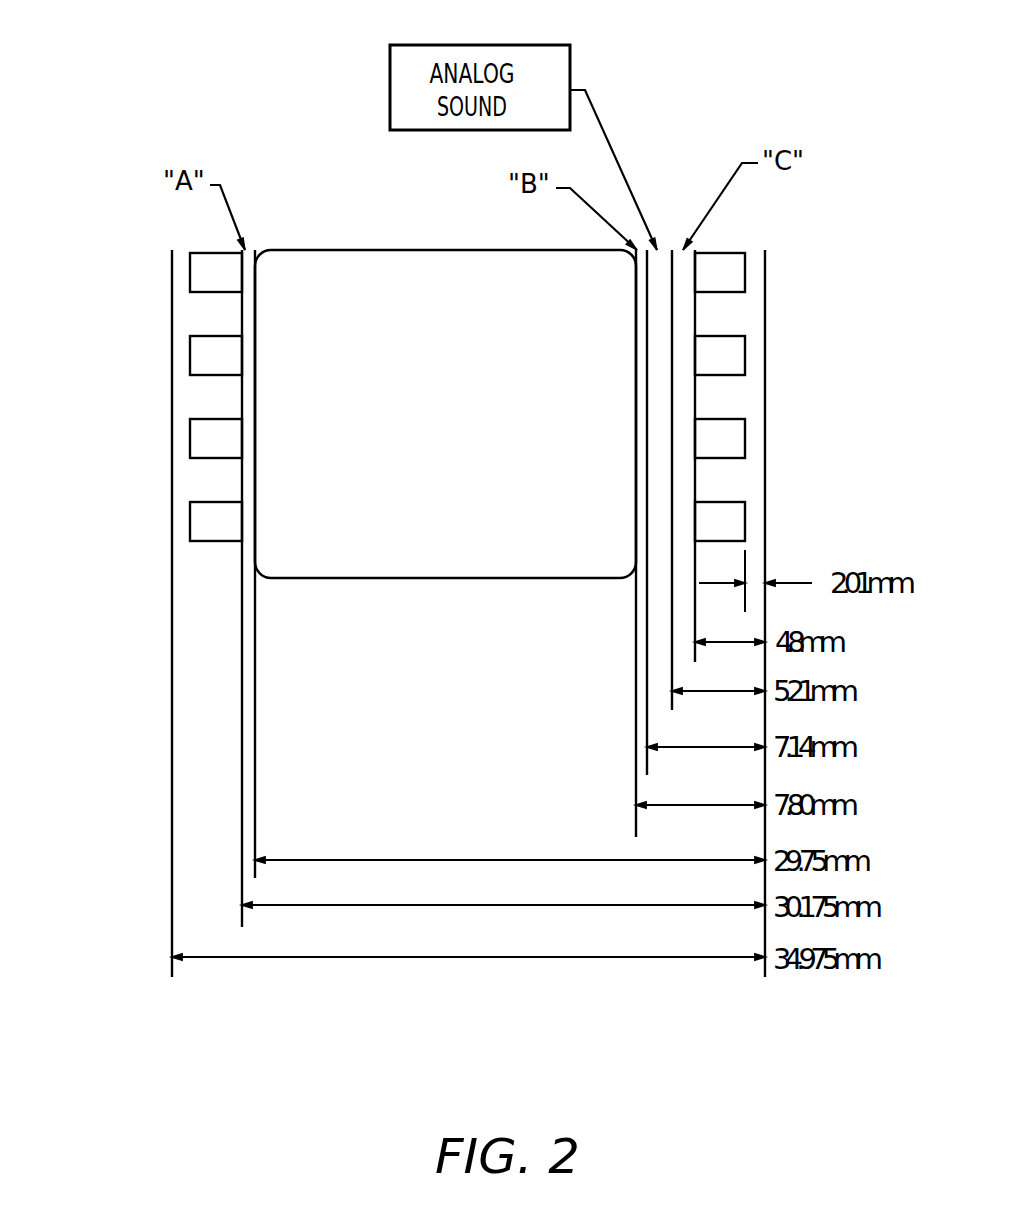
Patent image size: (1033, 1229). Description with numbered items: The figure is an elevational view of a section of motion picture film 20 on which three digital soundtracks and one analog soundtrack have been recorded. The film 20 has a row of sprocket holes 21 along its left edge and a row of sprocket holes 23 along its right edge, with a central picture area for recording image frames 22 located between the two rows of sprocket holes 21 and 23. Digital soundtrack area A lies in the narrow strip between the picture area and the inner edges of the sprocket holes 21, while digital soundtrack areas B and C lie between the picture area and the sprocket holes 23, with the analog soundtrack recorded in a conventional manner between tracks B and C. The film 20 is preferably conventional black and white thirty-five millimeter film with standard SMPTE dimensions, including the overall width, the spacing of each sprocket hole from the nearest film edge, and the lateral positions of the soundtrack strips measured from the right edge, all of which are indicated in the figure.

The motion picture film 20 is at (404, 613).
The sprocket holes 21 is at (143, 411).
The image frames 22 is at (459, 428).
The sprocket holes 23 is at (793, 397).